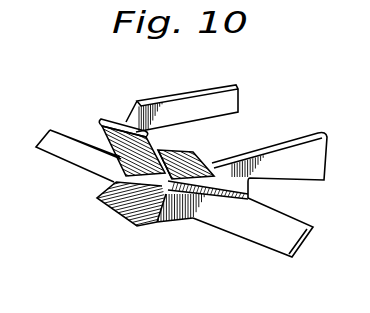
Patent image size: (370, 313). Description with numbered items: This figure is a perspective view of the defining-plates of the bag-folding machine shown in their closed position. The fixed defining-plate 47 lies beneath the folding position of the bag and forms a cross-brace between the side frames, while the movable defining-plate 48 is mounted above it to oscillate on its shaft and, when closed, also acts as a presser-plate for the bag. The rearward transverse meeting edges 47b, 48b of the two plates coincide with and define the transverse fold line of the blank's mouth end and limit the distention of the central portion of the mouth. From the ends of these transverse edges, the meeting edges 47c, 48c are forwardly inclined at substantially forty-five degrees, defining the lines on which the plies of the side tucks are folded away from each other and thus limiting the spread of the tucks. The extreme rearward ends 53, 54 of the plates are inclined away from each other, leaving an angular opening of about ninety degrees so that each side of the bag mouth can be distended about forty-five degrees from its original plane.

The fixed defining-plate 47 is at (163, 221).
The rearward transverse meeting edge 47b is at (112, 184).
The forwardly inclined meeting edge 47c is at (210, 193).
The movable defining-plate 48 is at (200, 173).
The rearward transverse meeting edge 48b is at (151, 168).
The forwardly inclined meeting edge 48c is at (228, 187).
The extreme rearward end 53 is at (127, 197).
The extreme rearward end 54 is at (125, 128).